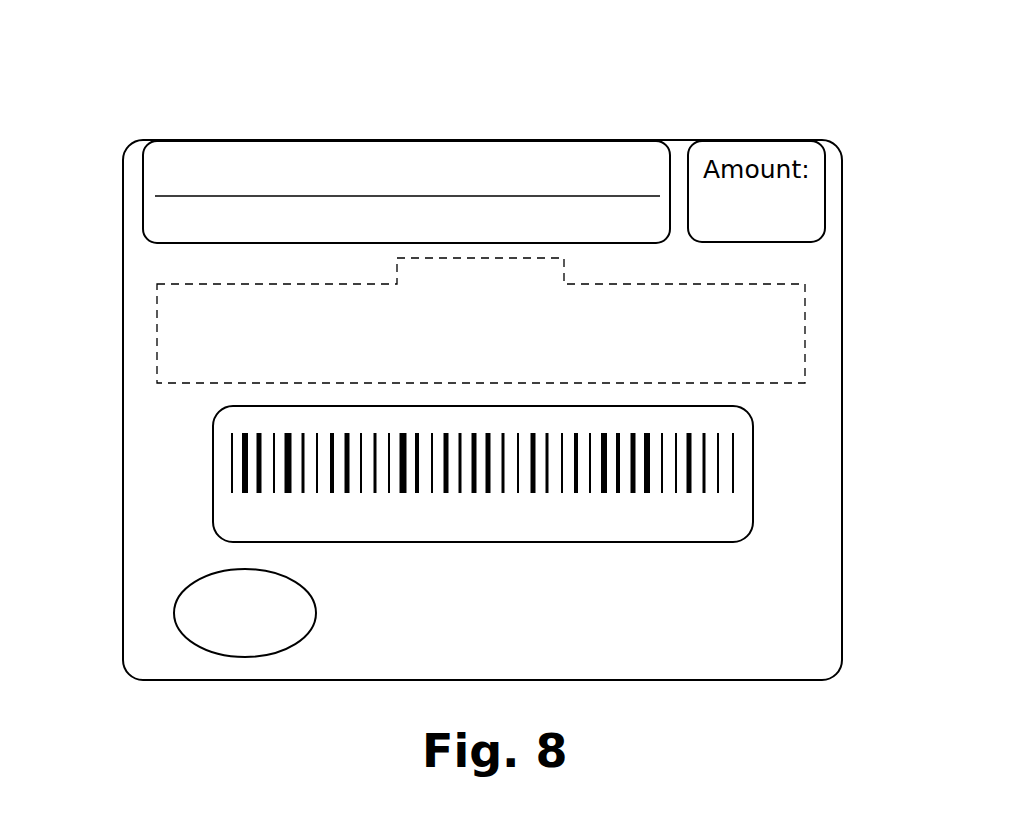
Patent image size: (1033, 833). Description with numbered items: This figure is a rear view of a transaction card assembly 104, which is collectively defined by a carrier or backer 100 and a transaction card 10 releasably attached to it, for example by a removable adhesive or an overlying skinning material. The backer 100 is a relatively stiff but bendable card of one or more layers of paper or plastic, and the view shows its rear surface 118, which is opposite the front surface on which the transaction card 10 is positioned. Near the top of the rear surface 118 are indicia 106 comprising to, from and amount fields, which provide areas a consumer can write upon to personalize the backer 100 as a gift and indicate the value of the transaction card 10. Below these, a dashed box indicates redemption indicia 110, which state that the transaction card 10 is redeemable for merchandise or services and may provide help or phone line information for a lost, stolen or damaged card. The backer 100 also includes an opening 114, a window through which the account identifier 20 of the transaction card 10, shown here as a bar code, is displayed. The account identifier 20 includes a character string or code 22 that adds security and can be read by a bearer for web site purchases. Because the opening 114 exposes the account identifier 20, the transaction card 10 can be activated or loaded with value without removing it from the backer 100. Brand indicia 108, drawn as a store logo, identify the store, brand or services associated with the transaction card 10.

The transaction card 10 is at (255, 517).
The account identifier 20 is at (728, 452).
The character string or code 22 is at (693, 513).
The backer 100 is at (120, 124).
The transaction card assembly 104 is at (152, 74).
The indicia 106 is at (285, 170).
The brand indicia 108 is at (240, 647).
The redemption indicia 110 is at (805, 320).
The opening 114 is at (342, 542).
The rear surface 118 is at (800, 632).